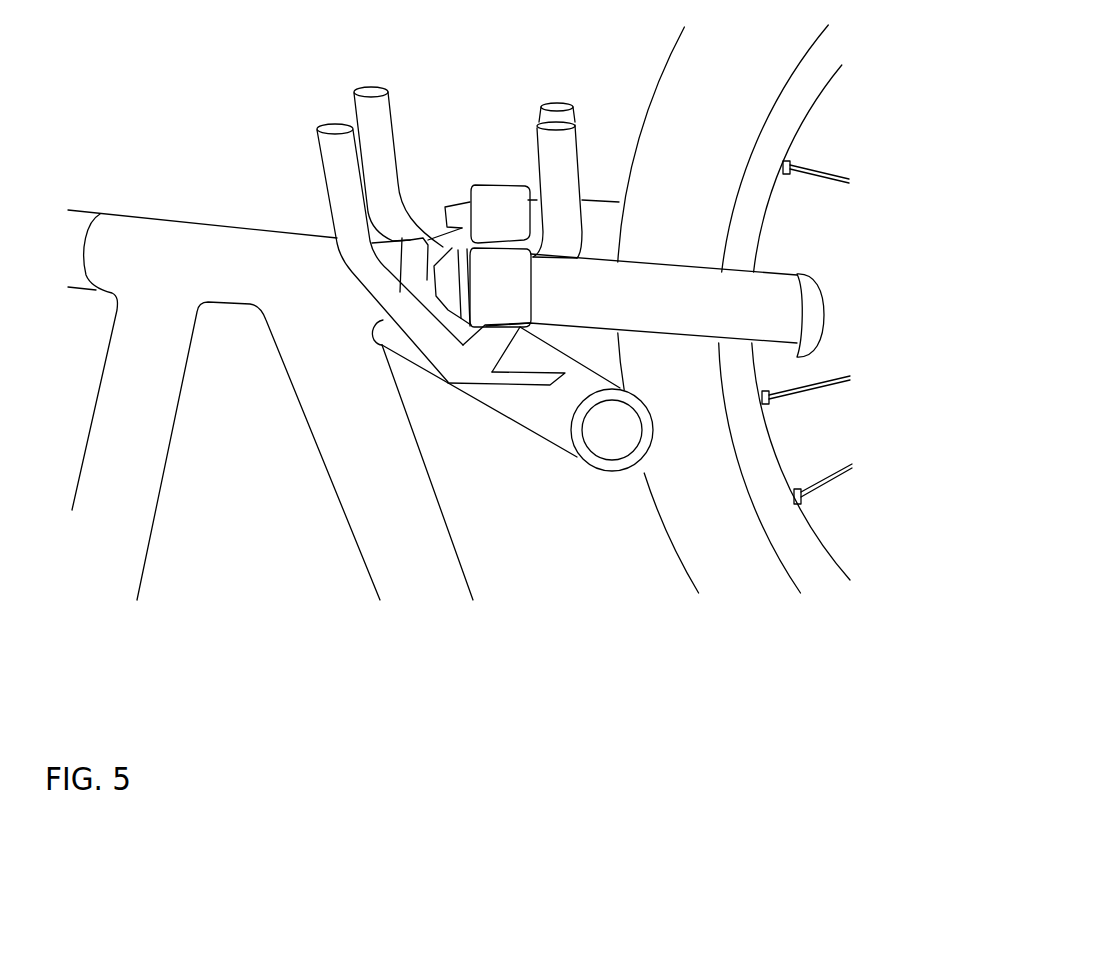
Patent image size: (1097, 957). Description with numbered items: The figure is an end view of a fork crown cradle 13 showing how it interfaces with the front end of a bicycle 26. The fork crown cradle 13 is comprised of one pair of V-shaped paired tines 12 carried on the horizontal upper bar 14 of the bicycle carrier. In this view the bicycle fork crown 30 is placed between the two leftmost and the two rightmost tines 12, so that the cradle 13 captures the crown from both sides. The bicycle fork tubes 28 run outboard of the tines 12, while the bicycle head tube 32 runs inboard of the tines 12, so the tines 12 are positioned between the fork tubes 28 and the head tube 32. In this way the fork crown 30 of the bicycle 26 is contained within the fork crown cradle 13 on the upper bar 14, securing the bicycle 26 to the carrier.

The tines 12 is at (553, 167).
The fork crown cradle 13 is at (315, 107).
The horizontal upper bar 14 is at (550, 408).
The bicycle 26 is at (317, 487).
The bicycle fork tubes 28 is at (733, 318).
The bicycle fork crown 30 is at (498, 212).
The bicycle head tube 32 is at (197, 258).